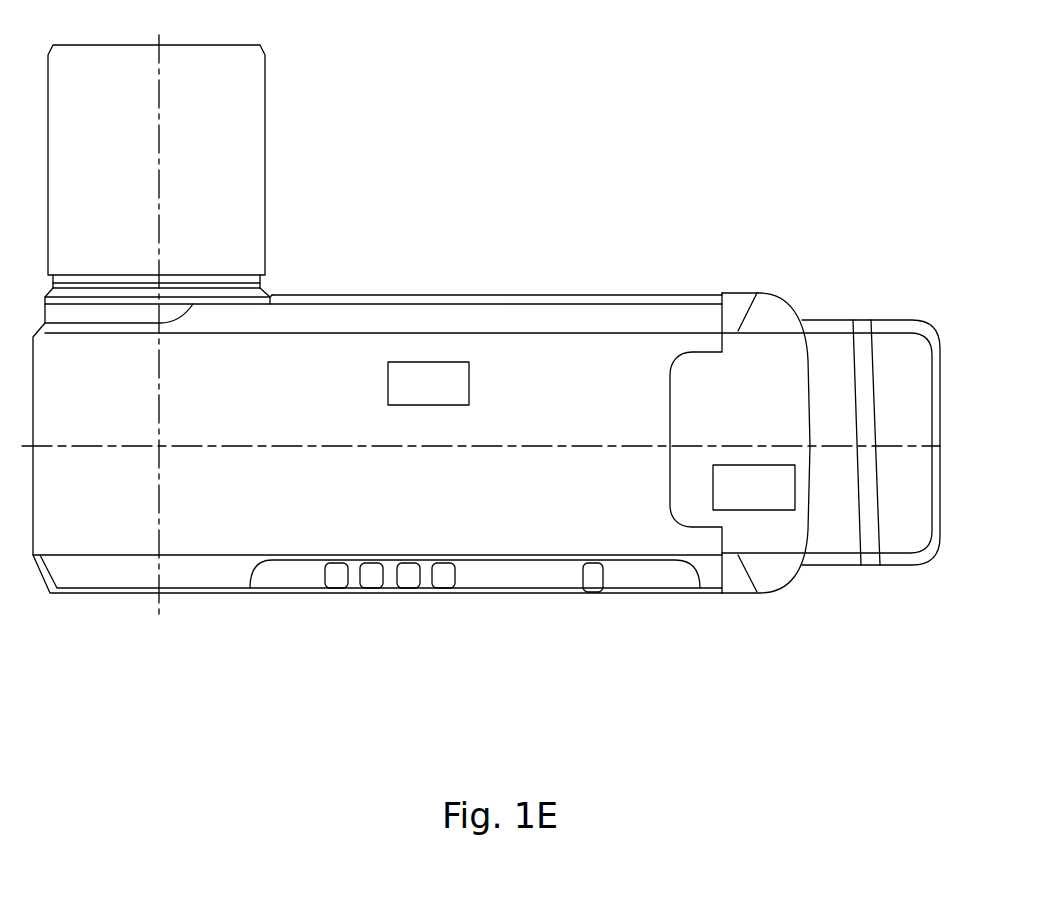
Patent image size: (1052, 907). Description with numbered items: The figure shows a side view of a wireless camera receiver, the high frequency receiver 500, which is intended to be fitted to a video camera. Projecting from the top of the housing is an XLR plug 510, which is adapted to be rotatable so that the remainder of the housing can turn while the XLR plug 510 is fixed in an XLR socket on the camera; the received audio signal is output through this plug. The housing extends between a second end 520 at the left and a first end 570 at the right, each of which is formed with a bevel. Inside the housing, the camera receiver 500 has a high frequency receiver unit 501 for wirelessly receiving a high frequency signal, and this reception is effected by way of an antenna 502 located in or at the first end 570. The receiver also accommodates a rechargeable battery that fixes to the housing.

The high frequency receiver 500 is at (428, 295).
The high frequency receiver unit 501 is at (428, 383).
The antenna 502 is at (754, 487).
The XLR plug 510 is at (158, 184).
The second end 520 is at (78, 423).
The first end 570 is at (740, 443).